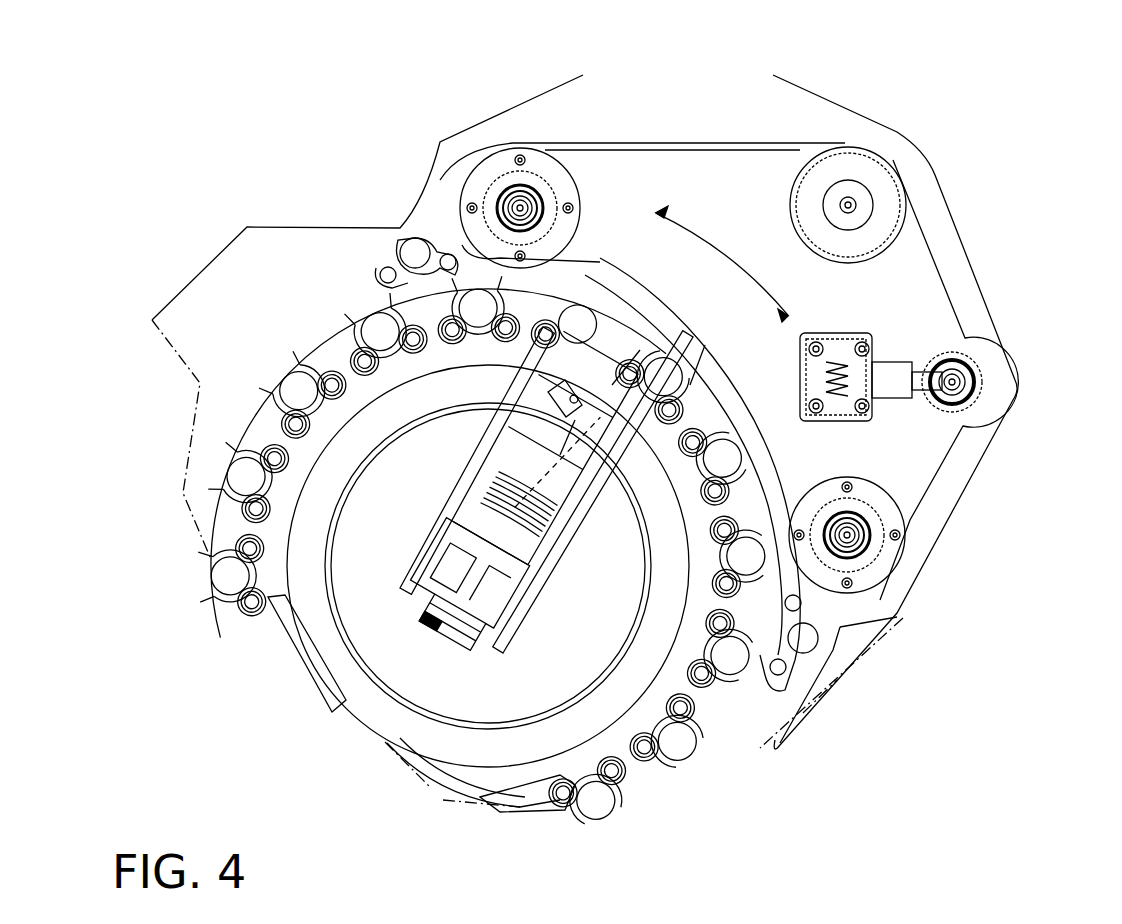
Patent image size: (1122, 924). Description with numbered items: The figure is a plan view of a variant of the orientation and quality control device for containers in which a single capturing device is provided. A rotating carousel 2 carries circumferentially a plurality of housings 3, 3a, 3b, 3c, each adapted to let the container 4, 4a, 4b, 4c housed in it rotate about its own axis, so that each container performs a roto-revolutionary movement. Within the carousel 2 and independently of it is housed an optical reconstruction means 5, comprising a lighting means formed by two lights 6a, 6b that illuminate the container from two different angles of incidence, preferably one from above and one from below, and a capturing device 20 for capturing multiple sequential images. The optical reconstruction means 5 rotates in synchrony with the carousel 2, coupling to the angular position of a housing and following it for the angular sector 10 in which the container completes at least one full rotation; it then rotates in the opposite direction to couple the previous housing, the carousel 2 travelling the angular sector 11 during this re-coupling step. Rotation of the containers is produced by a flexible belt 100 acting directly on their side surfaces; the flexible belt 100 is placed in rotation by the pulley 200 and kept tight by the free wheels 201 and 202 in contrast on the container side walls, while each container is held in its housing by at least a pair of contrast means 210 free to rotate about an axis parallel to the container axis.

The flexible belt 100 is at (933, 265).
The pulley 200 is at (880, 173).
The free wheel 201 is at (880, 547).
The free wheel 202 is at (490, 170).
The rotating carousel 2 is at (360, 393).
The housing 3 is at (330, 427).
The housing 3a is at (680, 405).
The housing 3b is at (588, 318).
The housing 3c is at (470, 303).
The container 4 is at (298, 383).
The container 4a is at (668, 370).
The container 4b is at (560, 455).
The container 4c is at (477, 307).
The optical reconstruction means 5 is at (452, 625).
The light 6a is at (612, 385).
The light 6b is at (517, 472).
The angular sector 10 is at (690, 385).
The angular sector 11 is at (676, 213).
The capturing device 20 is at (477, 550).
The contrast means 210 is at (645, 747).